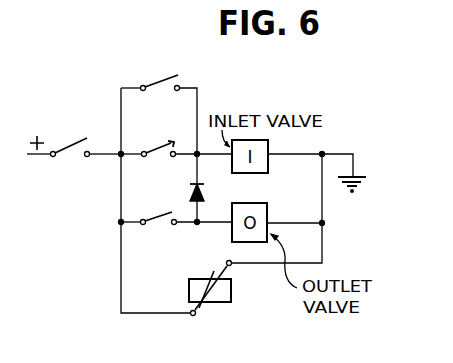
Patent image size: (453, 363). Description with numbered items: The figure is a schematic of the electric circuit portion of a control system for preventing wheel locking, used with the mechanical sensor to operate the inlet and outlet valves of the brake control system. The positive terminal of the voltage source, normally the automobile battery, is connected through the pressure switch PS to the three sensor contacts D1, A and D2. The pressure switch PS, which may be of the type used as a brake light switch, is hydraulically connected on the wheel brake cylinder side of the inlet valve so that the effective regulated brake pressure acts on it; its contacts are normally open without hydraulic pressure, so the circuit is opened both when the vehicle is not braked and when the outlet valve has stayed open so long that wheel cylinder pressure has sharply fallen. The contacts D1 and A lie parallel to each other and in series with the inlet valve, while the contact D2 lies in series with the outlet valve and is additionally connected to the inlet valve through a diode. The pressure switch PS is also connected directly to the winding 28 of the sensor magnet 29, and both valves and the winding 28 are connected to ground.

The winding 28 is at (200, 275).
The sensor magnet 29 is at (231, 291).
The pressure switch PS is at (69, 138).
The contact D1 is at (157, 80).
The contact A is at (162, 137).
The contact D2 is at (157, 210).